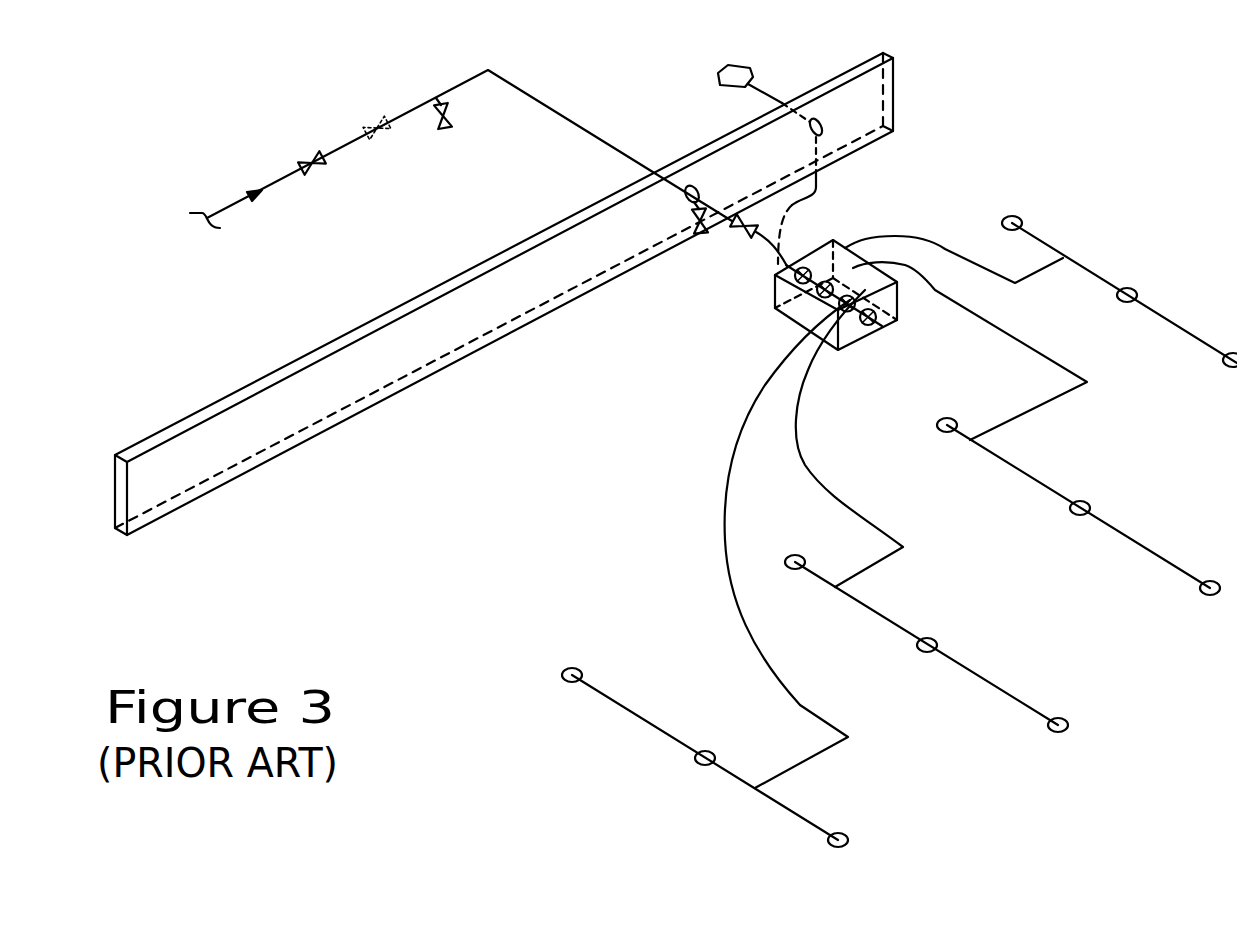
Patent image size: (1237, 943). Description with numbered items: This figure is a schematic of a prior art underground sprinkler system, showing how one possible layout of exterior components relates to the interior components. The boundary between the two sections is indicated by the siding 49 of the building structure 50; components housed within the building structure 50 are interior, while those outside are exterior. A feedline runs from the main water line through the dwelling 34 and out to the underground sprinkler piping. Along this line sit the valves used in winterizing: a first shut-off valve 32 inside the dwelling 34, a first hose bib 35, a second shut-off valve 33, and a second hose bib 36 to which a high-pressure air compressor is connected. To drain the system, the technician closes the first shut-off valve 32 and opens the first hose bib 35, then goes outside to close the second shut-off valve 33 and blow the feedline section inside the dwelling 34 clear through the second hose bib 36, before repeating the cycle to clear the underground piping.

The first shut-off valve 32 is at (306, 171).
The second shut-off valve 33 is at (740, 238).
The dwelling 34 is at (571, 119).
The first hose bib 35 is at (450, 118).
The second hose bib 36 is at (705, 236).
The siding 49 is at (868, 106).
The building structure 50 is at (181, 333).